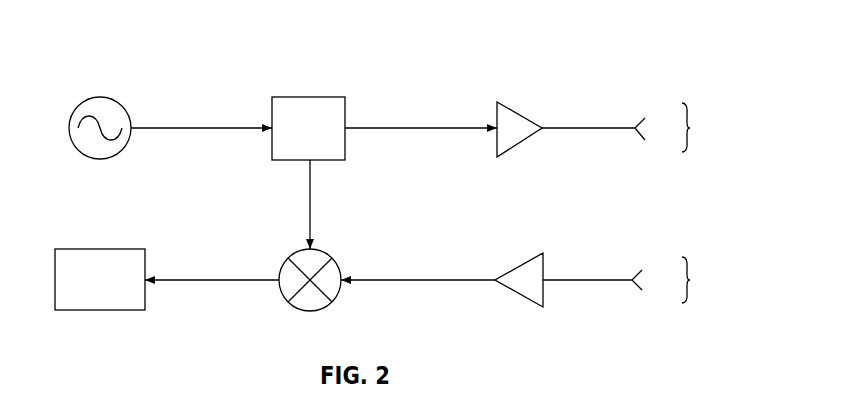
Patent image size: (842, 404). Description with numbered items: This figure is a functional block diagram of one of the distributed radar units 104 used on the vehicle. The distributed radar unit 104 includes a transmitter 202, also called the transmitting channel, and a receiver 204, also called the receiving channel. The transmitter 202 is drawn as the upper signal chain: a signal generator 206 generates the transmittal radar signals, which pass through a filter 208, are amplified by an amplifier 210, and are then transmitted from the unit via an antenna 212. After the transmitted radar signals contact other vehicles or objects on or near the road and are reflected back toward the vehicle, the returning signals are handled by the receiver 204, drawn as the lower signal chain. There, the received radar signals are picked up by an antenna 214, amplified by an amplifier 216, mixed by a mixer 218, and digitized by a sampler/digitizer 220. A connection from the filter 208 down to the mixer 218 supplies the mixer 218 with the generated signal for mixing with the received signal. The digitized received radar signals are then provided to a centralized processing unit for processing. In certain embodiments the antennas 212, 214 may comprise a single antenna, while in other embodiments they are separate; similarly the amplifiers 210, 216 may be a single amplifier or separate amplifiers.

The distributed radar unit 104 is at (677, 22).
The transmitter 202 is at (689, 127).
The receiver 204 is at (689, 280).
The signal generator 206 is at (121, 106).
The filter 208 is at (308, 97).
The amplifier 210 is at (519, 116).
The antenna 212 is at (643, 117).
The antenna 214 is at (642, 270).
The amplifier 216 is at (520, 265).
The mixer 218 is at (325, 254).
The sampler/digitizer 220 is at (100, 249).